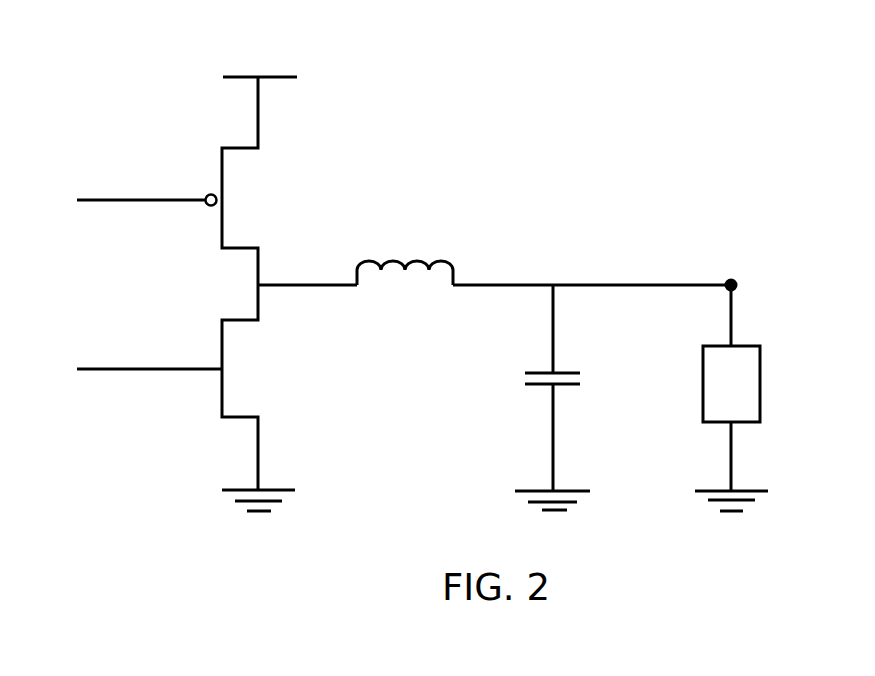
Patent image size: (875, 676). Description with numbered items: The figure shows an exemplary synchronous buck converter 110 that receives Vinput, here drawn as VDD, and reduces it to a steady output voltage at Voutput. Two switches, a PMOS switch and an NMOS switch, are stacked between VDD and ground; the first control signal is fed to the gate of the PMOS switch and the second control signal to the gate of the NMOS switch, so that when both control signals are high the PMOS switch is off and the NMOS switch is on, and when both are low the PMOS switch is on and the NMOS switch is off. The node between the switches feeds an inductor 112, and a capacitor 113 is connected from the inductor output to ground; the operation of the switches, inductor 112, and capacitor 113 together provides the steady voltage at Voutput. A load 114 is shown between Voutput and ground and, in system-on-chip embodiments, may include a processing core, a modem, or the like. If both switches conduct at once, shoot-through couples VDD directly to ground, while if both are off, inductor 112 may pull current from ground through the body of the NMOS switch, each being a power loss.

The synchronous buck converter 110 is at (760, 130).
The inductor 112 is at (418, 262).
The capacitor 113 is at (536, 388).
The load 114 is at (761, 390).